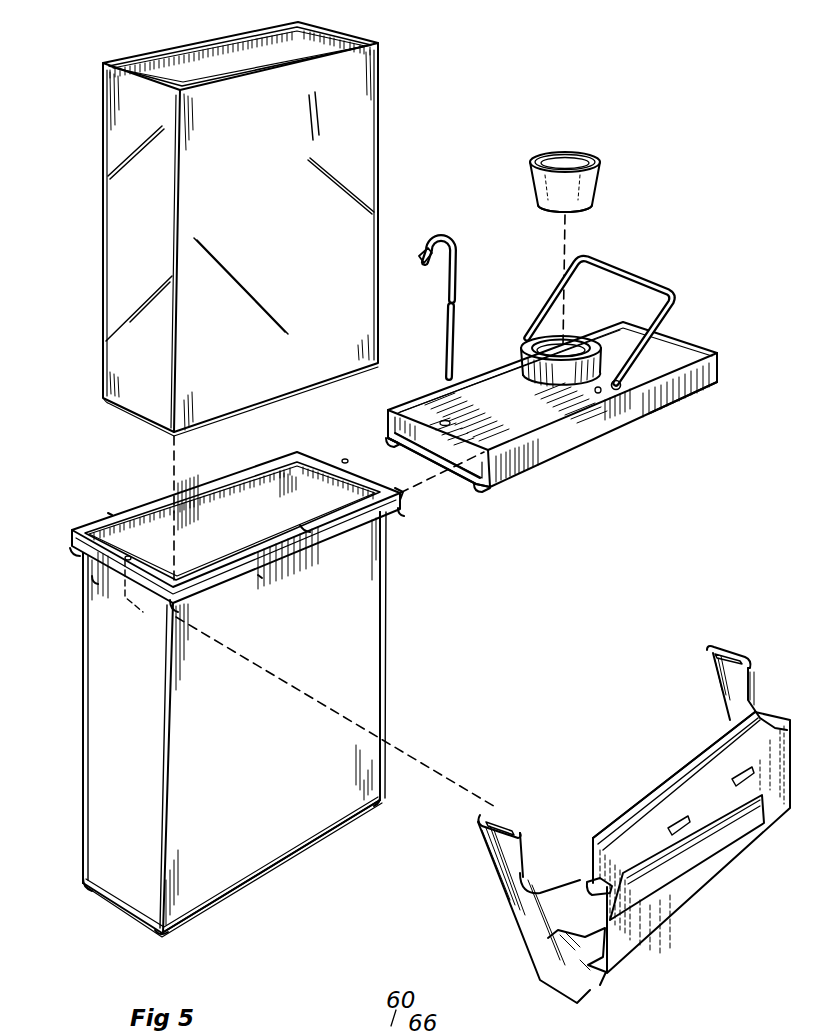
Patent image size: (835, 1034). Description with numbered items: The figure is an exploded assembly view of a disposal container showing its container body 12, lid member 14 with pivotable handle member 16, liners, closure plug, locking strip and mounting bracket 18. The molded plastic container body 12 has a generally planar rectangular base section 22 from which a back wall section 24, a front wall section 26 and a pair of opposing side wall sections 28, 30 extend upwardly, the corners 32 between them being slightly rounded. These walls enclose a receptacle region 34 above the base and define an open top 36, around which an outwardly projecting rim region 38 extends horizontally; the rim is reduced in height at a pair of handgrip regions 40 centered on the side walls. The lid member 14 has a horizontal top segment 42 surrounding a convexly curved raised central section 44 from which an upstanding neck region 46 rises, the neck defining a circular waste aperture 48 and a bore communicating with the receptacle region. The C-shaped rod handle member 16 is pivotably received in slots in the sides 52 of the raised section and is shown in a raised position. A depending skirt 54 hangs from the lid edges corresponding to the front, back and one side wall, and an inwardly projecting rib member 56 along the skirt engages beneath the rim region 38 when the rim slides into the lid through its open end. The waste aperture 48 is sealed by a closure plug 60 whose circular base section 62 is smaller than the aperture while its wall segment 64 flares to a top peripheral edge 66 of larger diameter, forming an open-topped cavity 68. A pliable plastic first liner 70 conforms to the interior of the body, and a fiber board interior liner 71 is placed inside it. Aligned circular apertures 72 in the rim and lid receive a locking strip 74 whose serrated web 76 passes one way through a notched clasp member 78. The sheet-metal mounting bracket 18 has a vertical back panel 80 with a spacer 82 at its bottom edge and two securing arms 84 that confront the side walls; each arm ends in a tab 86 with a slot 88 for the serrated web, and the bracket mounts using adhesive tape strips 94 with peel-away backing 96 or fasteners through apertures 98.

The container body 12 is at (392, 614).
The lid member 14 is at (707, 342).
The handle member 16 is at (652, 290).
The mounting bracket 18 is at (664, 776).
The base section 22 is at (222, 905).
The back wall section 24 is at (360, 702).
The front wall section 26 is at (83, 818).
The side wall section 28 is at (108, 700).
The side wall section 30 is at (335, 508).
The corners 32 is at (382, 803).
The receptacle region 34 is at (402, 500).
The open top 36 is at (305, 535).
The rim region 38 is at (110, 513).
The handgrip regions 40 is at (345, 458).
The top segment 42 is at (415, 406).
The raised central section 44 is at (490, 384).
The neck region 46 is at (520, 357).
The waste aperture 48 is at (566, 342).
The sides 52 is at (598, 392).
The depending skirt 54 is at (390, 440).
The rib member 56 is at (400, 445).
The closure plug 60 is at (527, 148).
The base section 62 is at (553, 212).
The wall segment 64 is at (600, 180).
The top peripheral edge 66 is at (597, 162).
The cavity 68 is at (561, 158).
The first liner 70 is at (102, 145).
The interior liner 71 is at (196, 60).
The circular aperture 72 is at (130, 557).
The locking strip 74 is at (432, 240).
The serrated web 76 is at (447, 320).
The notched clasp member 78 is at (424, 258).
The back panel 80 is at (650, 797).
The spacer 82 is at (592, 973).
The securing arms 84 is at (752, 684).
The tab 86 is at (750, 660).
The slot 88 is at (706, 668).
The adhesive tape strips 94 is at (622, 830).
The peel-away backing 96 is at (752, 748).
The apertures 98 is at (745, 775).